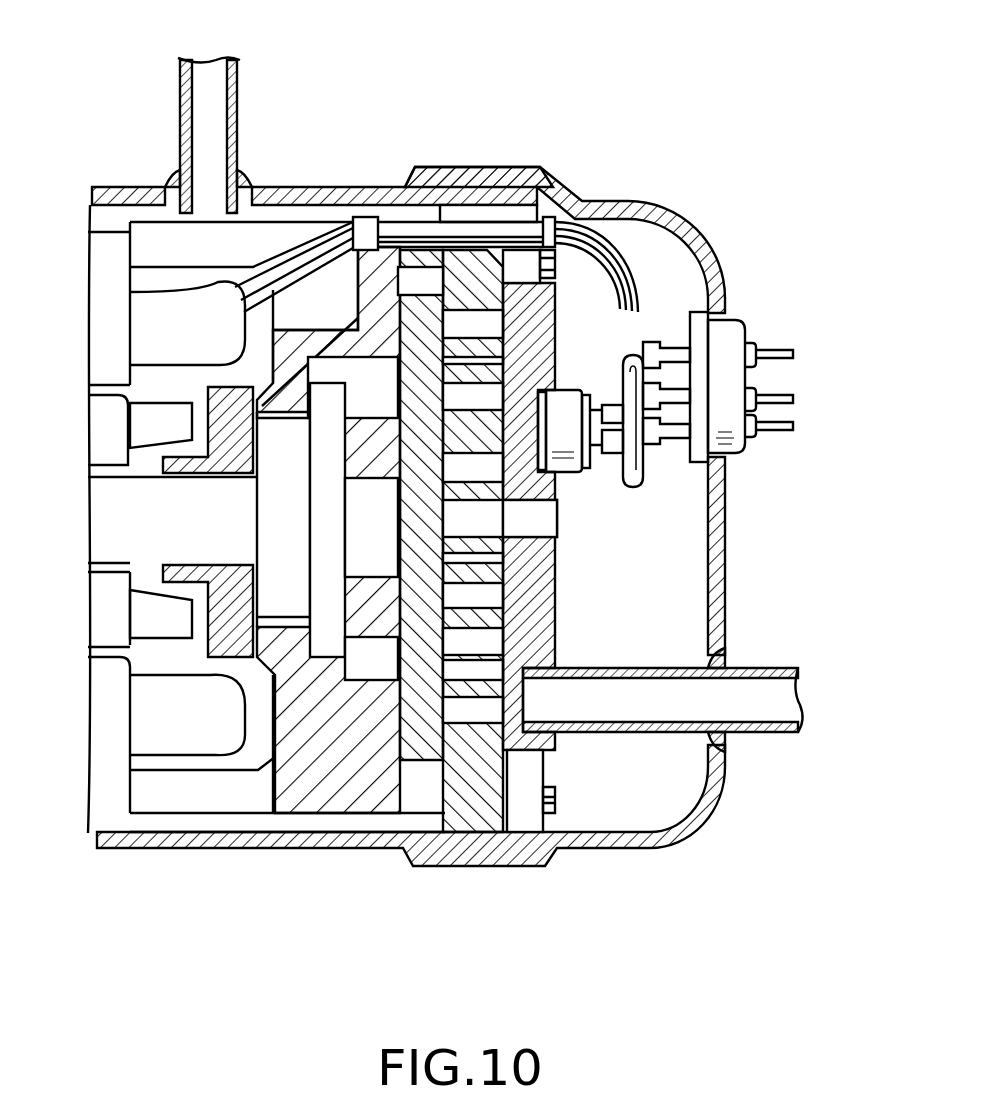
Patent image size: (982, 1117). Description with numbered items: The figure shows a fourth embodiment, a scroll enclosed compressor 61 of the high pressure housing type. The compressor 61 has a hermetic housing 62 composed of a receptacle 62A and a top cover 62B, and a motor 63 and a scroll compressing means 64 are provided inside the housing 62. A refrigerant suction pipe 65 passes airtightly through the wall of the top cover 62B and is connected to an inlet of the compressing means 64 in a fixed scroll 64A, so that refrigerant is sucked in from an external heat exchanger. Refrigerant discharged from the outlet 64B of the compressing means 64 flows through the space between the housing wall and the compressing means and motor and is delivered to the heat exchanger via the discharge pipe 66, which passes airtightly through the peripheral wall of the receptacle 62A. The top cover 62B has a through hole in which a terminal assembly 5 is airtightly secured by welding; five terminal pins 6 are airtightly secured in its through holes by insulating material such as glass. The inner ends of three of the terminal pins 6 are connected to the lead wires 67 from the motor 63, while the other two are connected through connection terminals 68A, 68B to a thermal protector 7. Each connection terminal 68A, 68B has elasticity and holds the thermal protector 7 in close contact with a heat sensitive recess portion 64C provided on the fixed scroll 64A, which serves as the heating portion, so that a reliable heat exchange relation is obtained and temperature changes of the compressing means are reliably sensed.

The terminal assembly 5 is at (733, 335).
The terminal pins 6 is at (805, 352).
The thermal protector 7 is at (578, 440).
The compressor 61 is at (697, 847).
The hermetic housing 62 is at (315, 185).
The receptacle 62A is at (393, 195).
The top cover 62B is at (467, 175).
The motor 63 is at (123, 258).
The scroll compressing means 64 is at (382, 670).
The fixed scroll 64A is at (540, 625).
The outlet 64B is at (548, 525).
The heat sensitive recess portion 64C is at (560, 250).
The refrigerant suction pipe 65 is at (768, 736).
The discharge pipe 66 is at (233, 100).
The lead wires 67 is at (633, 205).
The connection terminal 68A is at (633, 350).
The connection terminal 68B is at (648, 470).